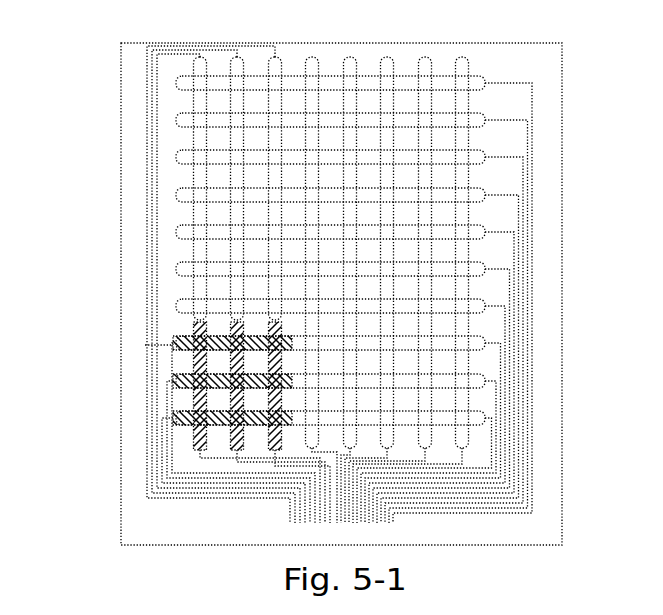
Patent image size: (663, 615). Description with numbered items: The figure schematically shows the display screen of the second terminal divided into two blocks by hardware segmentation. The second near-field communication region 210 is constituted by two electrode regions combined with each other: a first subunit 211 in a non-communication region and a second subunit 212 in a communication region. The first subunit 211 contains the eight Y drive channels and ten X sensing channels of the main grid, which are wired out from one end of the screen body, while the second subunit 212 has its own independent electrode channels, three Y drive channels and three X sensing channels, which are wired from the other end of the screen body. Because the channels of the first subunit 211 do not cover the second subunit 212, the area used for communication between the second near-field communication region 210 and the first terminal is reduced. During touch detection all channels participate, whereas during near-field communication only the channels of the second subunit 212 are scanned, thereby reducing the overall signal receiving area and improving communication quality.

The second near-field communication region 210 is at (563, 122).
The first subunit 211 is at (420, 242).
The second subunit 212 is at (218, 363).